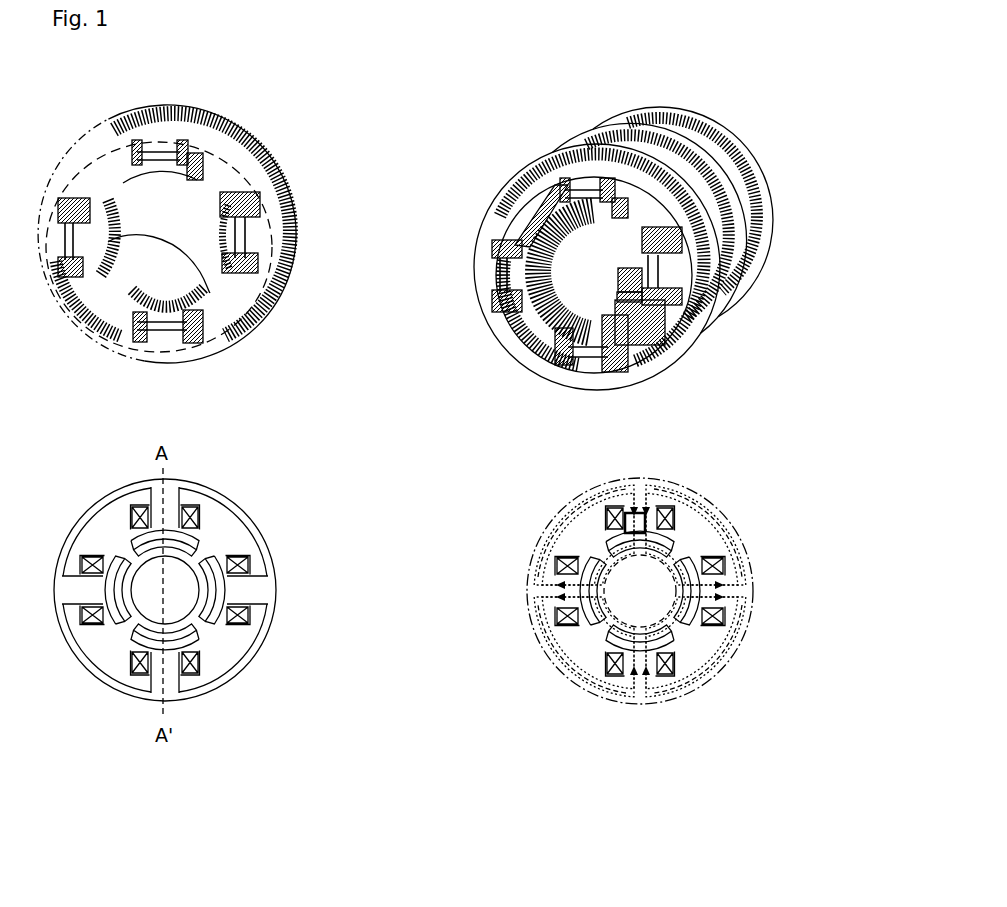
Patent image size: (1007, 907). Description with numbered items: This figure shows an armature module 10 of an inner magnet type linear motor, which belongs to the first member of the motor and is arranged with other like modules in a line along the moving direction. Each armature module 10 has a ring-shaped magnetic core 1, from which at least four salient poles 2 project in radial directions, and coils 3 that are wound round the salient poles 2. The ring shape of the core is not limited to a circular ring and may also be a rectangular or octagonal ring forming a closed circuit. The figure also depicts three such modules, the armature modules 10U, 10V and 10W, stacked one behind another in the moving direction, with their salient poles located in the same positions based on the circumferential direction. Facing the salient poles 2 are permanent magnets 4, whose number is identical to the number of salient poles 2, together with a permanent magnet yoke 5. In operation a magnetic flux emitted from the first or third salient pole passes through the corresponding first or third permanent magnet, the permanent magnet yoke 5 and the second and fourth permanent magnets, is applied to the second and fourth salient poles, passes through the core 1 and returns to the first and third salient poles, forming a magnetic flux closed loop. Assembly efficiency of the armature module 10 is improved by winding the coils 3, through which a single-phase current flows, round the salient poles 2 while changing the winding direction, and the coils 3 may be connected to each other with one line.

The armature module 10 is at (270, 160).
The magnetic core 1 is at (268, 216).
The salient pole 2 is at (210, 293).
The coil 3 is at (243, 232).
The permanent magnet 4 is at (200, 548).
The permanent magnet yoke 5 is at (205, 593).
The armature module 10U is at (650, 357).
The armature module 10V is at (697, 332).
The armature module 10W is at (737, 307).